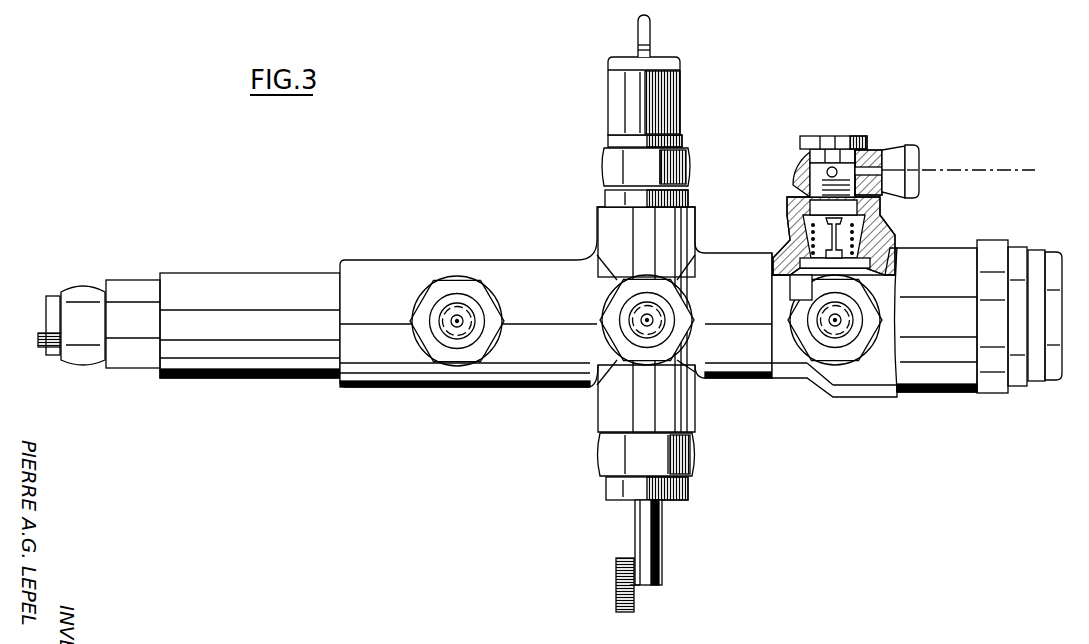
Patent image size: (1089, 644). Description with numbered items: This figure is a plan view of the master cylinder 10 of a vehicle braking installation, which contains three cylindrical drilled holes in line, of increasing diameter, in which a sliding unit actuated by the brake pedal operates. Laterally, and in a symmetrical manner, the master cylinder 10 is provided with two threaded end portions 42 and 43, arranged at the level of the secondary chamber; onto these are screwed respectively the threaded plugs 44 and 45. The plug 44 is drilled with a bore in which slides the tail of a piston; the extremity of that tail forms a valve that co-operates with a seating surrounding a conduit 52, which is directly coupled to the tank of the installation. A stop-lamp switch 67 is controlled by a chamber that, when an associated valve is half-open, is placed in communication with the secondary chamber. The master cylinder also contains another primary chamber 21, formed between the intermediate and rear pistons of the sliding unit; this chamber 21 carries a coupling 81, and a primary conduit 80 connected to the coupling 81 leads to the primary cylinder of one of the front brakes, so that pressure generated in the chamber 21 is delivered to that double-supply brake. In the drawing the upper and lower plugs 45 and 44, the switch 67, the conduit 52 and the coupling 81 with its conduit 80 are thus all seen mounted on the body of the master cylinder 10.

The master cylinder 10 is at (377, 257).
The primary chamber 21 is at (860, 283).
The threaded end portion 42 is at (598, 408).
The threaded end portion 43 is at (597, 226).
The threaded plug 44 is at (606, 493).
The threaded plug 45 is at (605, 197).
The conduit 52 is at (660, 553).
The stop-lamp switch 67 is at (607, 98).
The primary conduit 80 is at (975, 170).
The coupling 81 is at (897, 147).